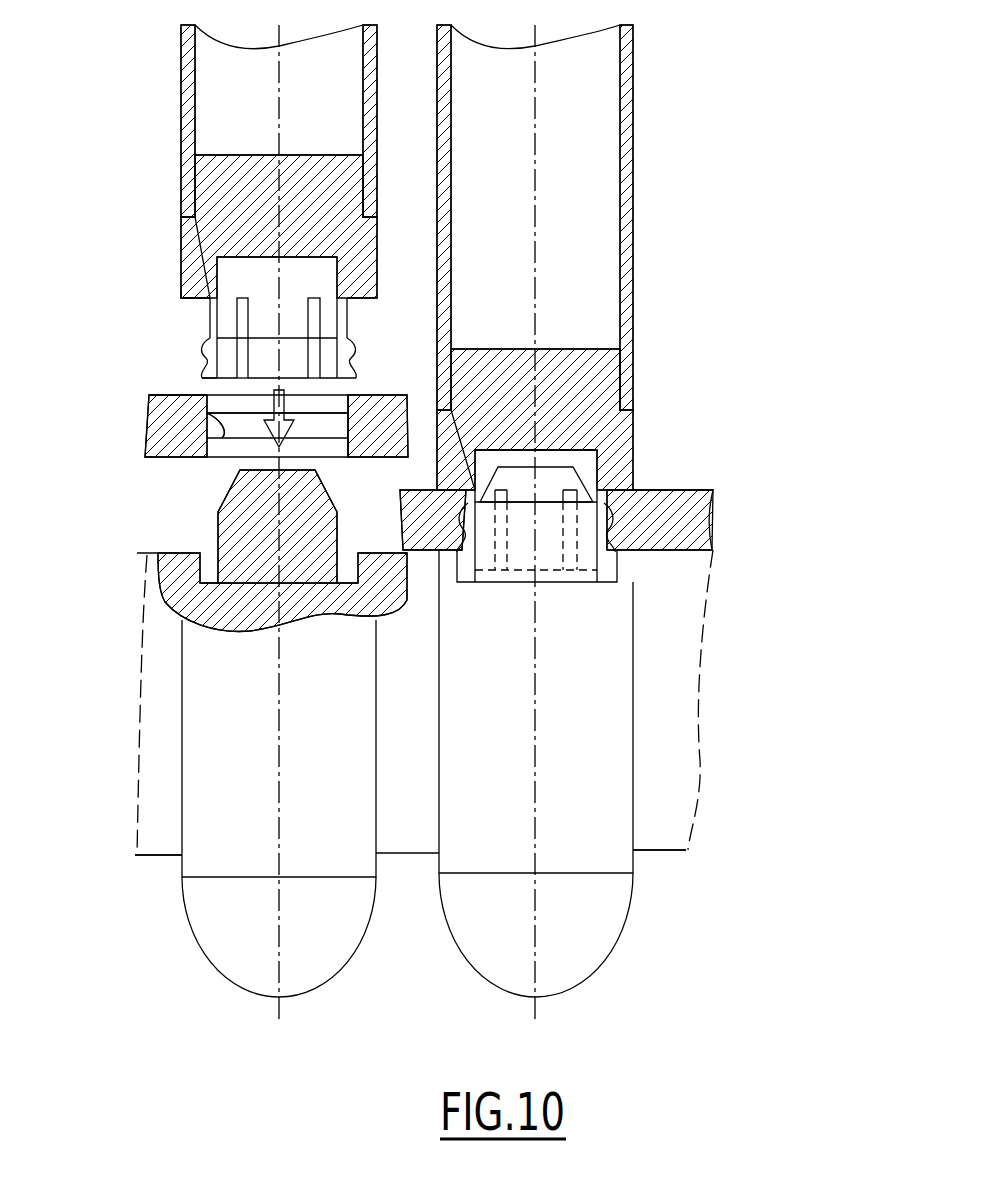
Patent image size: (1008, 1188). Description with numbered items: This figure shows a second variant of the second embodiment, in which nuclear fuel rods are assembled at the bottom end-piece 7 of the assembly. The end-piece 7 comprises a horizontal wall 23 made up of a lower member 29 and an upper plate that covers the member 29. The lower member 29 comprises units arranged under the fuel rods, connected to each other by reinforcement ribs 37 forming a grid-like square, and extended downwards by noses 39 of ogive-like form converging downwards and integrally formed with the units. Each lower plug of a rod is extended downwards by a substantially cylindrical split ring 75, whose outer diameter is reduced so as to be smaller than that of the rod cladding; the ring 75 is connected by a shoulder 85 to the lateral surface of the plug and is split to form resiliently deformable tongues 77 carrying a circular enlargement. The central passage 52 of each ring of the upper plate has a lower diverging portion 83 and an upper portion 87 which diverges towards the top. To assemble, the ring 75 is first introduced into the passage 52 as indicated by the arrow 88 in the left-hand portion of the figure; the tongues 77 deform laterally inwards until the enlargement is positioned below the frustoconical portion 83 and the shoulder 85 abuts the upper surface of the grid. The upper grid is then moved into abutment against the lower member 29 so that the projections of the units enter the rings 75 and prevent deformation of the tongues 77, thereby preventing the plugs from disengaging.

The end-piece 7 is at (840, 767).
The horizontal wall 23 is at (727, 657).
The lower member 29 is at (735, 767).
The reinforcement rib 37 is at (143, 803).
The nose 39 is at (480, 946).
The internal passage 52 is at (392, 411).
The ring 75 is at (200, 352).
The tongue 77 is at (330, 333).
The lower portion 83 is at (350, 452).
The shoulder 85 is at (185, 296).
The upper portion 87 is at (232, 440).
The arrow 88 is at (348, 412).